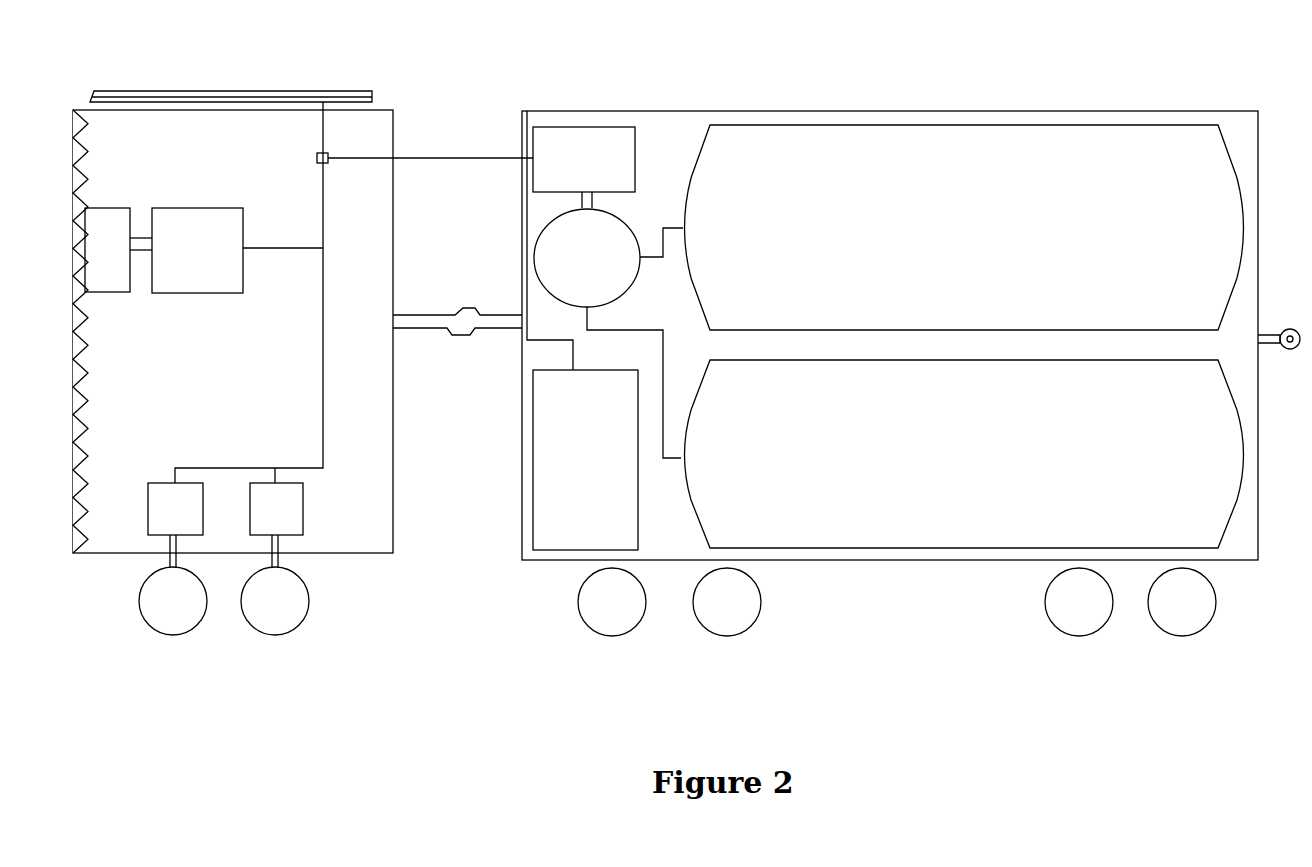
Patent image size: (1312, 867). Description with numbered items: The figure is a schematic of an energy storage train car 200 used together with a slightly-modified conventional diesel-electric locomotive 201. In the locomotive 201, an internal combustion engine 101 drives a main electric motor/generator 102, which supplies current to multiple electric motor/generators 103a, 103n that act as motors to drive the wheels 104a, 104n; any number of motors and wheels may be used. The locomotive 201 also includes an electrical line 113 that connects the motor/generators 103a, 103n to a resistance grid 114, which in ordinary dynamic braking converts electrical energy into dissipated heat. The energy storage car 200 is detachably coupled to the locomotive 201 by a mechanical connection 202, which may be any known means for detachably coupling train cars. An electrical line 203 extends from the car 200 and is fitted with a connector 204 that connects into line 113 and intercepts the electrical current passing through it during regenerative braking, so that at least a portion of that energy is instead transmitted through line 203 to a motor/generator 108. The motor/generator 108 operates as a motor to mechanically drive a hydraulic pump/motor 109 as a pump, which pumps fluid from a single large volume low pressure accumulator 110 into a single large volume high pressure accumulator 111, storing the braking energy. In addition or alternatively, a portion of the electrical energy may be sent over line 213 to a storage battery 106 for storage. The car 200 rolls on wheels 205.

The energy storage train car 200 is at (802, 96).
The conventional diesel-electric locomotive 201 is at (299, 65).
The mechanical connection 202 is at (461, 311).
The electrical line 203 is at (483, 158).
The connector 204 is at (341, 148).
The wheel 205 is at (897, 602).
The line 213 is at (560, 347).
The internal combustion engine 101 is at (118, 250).
The main electric motor/generator 102 is at (237, 250).
The electric motor/generator 103a is at (175, 525).
The electric motor/generator 103n is at (276, 525).
The wheel 104a is at (173, 601).
The wheel 104n is at (275, 601).
The storage battery 106 is at (585, 460).
The motor/generator 108 is at (584, 167).
The hydraulic pump/motor 109 is at (608, 333).
The low pressure accumulator 110 is at (964, 227).
The high pressure accumulator 111 is at (964, 454).
The electrical line 113 is at (327, 307).
The resistance grid 114 is at (215, 91).